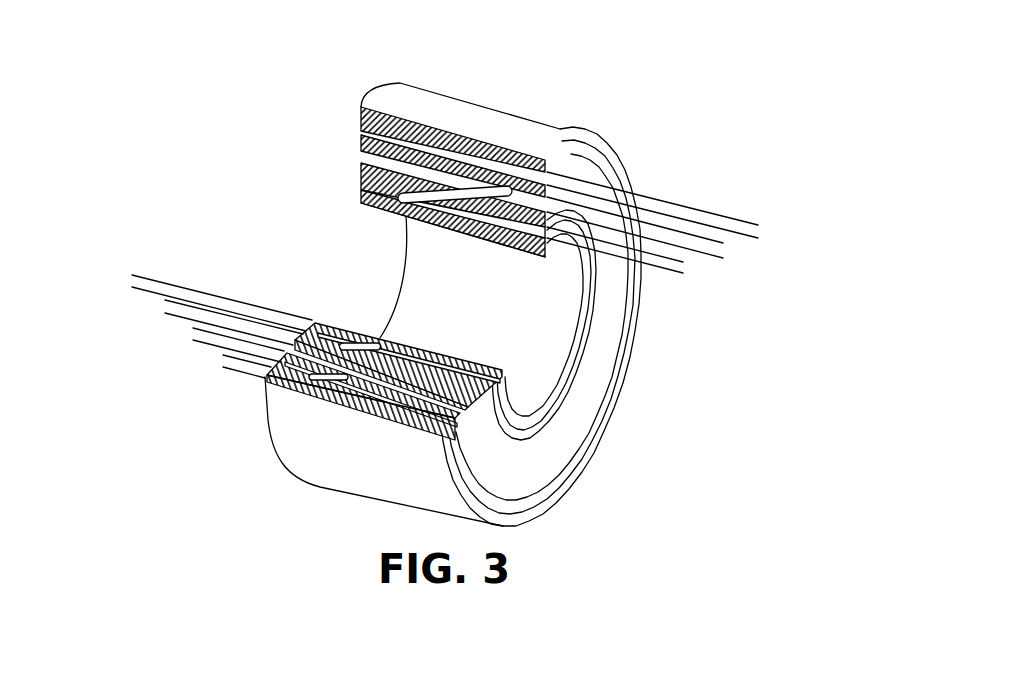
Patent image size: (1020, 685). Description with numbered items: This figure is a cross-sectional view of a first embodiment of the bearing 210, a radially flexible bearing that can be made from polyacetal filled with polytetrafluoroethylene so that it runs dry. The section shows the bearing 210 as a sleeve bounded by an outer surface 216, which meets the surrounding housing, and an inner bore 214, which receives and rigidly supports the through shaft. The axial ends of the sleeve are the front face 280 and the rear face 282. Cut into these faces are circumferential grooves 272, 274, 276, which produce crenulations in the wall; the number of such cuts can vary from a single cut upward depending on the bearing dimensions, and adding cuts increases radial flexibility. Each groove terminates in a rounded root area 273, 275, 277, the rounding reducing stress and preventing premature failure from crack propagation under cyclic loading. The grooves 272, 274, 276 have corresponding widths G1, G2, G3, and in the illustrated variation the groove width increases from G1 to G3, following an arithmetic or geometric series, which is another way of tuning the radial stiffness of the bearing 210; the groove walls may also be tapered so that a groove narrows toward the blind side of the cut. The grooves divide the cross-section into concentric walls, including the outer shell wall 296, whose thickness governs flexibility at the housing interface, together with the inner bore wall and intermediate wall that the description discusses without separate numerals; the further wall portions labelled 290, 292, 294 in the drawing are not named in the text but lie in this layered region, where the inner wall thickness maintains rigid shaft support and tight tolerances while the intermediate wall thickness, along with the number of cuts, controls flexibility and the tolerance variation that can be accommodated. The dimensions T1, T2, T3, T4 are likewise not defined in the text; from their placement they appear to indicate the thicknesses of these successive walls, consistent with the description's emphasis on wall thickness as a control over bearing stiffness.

The bearing 210 is at (432, 50).
The inner bore 214 is at (528, 331).
The outer surface 216 is at (523, 118).
The circumferential groove 272 is at (424, 207).
The root area 273 is at (361, 203).
The circumferential groove 274 is at (384, 160).
The root area 275 is at (518, 188).
The circumferential groove 276 is at (361, 143).
The root area 277 is at (361, 113).
The front face 280 is at (532, 462).
The rear face 282 is at (403, 262).
The first lower layer 290 is at (374, 338).
The second lower layer 292 is at (414, 338).
The third lower layer 294 is at (326, 385).
The outer shell wall 296 is at (360, 403).
The thickness T1 is at (214, 298).
The thickness T2 is at (226, 318).
The thickness T3 is at (231, 345).
The thickness T4 is at (241, 370).
The groove width G1 is at (627, 264).
The groove width G2 is at (647, 240).
The groove width G3 is at (666, 218).